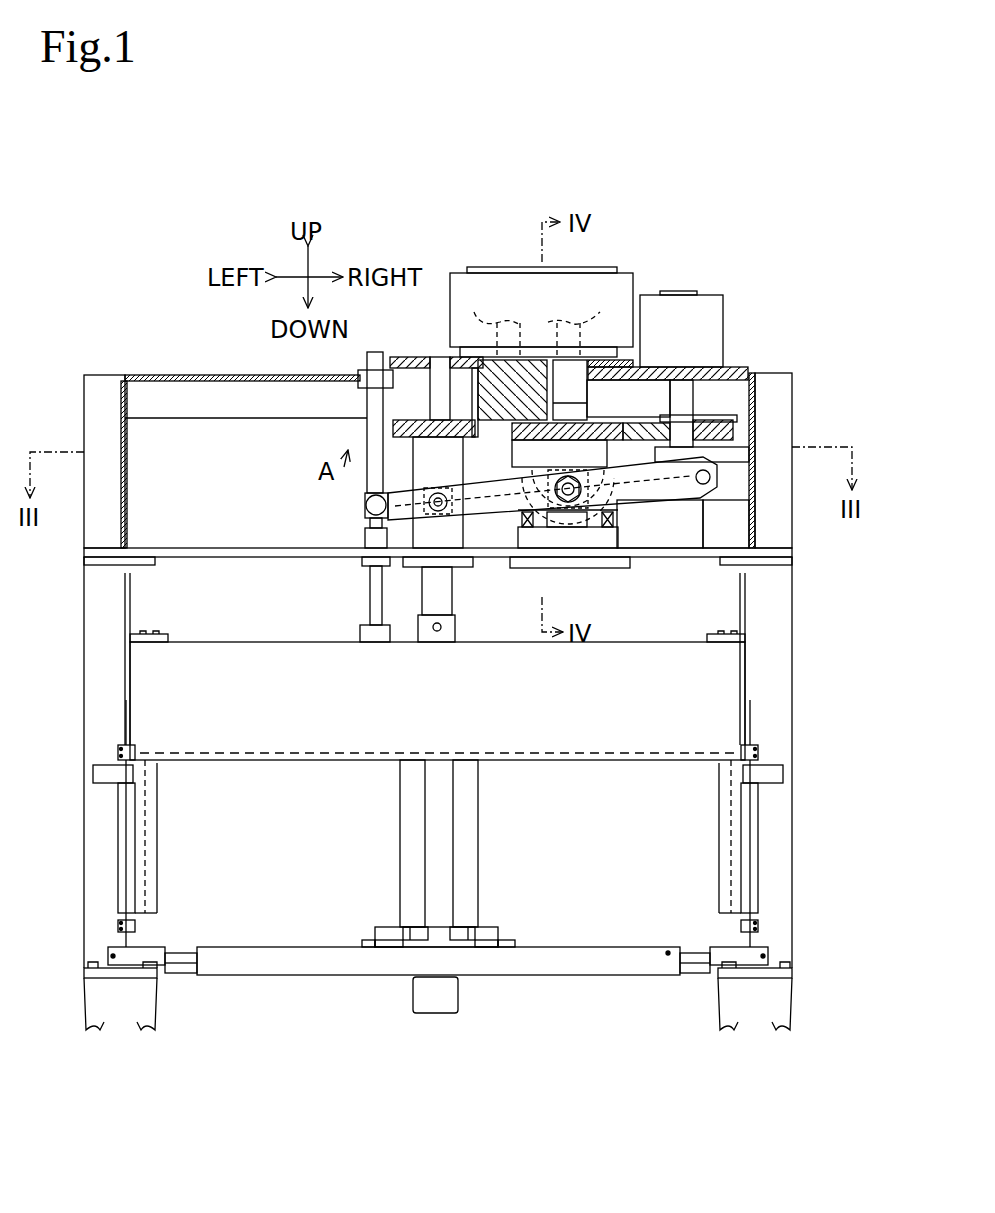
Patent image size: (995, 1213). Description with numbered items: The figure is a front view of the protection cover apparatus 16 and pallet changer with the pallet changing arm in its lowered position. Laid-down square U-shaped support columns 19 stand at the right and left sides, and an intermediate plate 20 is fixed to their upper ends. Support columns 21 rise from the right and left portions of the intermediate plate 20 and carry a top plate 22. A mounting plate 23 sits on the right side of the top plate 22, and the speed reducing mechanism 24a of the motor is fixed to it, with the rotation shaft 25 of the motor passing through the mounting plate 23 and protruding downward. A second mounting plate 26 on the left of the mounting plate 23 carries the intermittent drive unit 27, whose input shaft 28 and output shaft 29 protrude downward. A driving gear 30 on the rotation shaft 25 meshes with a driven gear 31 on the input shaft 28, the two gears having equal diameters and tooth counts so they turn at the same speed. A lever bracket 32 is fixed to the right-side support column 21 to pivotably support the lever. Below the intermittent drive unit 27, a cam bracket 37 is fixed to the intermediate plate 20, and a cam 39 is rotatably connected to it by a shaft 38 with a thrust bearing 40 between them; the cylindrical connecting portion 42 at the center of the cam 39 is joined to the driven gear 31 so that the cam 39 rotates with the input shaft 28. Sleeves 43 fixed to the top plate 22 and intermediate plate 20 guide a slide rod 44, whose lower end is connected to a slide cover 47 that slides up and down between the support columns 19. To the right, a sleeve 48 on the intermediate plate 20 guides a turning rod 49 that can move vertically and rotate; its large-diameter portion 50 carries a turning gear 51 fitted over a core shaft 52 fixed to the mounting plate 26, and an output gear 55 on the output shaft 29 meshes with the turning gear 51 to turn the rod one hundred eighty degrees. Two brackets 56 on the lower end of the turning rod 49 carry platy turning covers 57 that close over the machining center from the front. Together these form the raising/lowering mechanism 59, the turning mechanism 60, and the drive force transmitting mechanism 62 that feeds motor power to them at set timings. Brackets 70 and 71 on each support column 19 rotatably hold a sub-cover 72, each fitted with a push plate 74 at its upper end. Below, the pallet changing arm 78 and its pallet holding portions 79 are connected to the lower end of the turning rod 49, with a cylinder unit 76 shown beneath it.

The body conveyor apparatus 16 is at (190, 372).
The support columns 19 is at (84, 726).
The intermediate plate 20 is at (262, 548).
The support columns 21 is at (84, 466).
The top plate 22 is at (258, 375).
The mounting plate 23 is at (740, 367).
The speed reducing mechanism 24a is at (708, 296).
The rotation shaft 25 is at (697, 402).
The mounting plate 26 is at (640, 360).
The intermittent drive unit 27 is at (492, 267).
The input shaft 28 is at (607, 303).
The output shaft 29 is at (471, 297).
The driving gear 30 is at (640, 430).
The driven gear 31 is at (600, 430).
The lever bracket 32 is at (733, 508).
The cam bracket 37 is at (620, 537).
The shaft 38 is at (568, 530).
The cam 39 is at (525, 488).
The thrust bearing 40 is at (496, 545).
The connecting portion 42 is at (612, 456).
The sleeves 43 is at (360, 385).
The slide rod 44 is at (368, 582).
The slide cover 47 is at (256, 642).
The sleeve 48 is at (466, 548).
The turning rod 49 is at (455, 606).
The large-diameter portion 50 is at (412, 458).
The turning gear 51 is at (416, 420).
The core shaft 52 is at (410, 365).
The output gear 55 is at (478, 378).
The brackets 56 is at (400, 846).
The turning covers 57 is at (276, 940).
The raising/lowering mechanism 59 is at (364, 504).
The turning mechanism 60 is at (392, 428).
The drive force transmitting mechanism 62 is at (633, 265).
The bracket 70 is at (118, 926).
The bracket 71 is at (118, 750).
The sub-cover 72 is at (157, 888).
The push plate 74 is at (105, 783).
The cylinder unit 76 is at (500, 920).
The pallet changing arm 78 is at (425, 928).
The pallet holding portions 79 is at (395, 945).